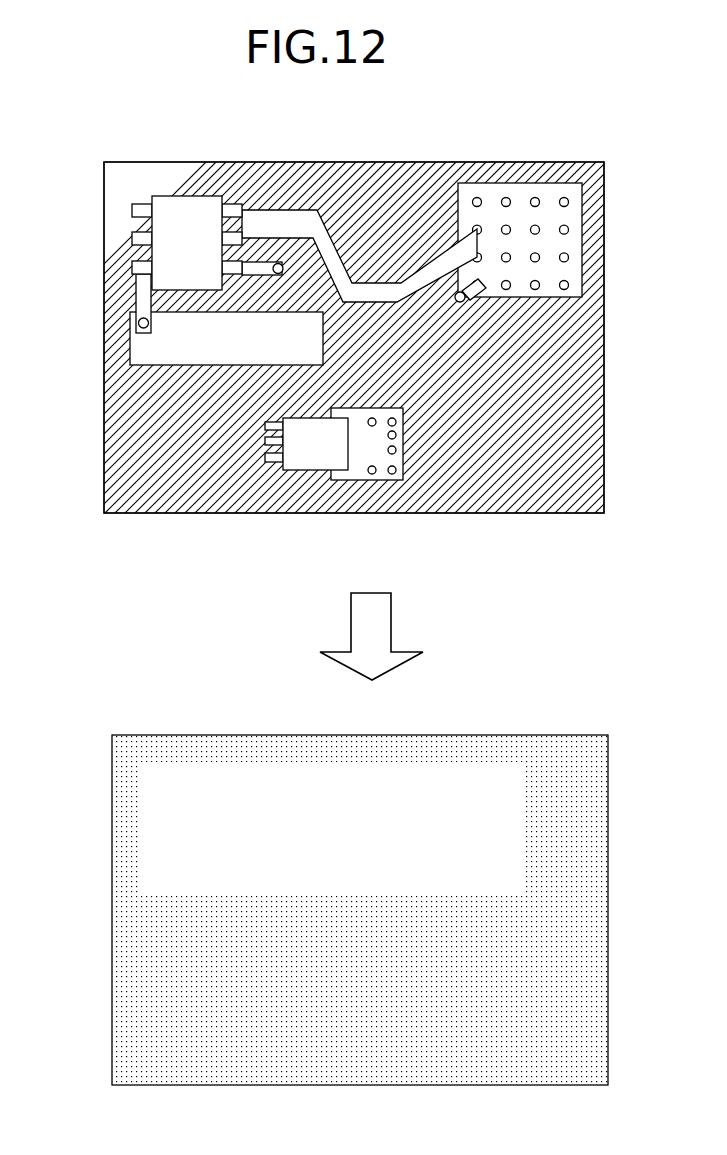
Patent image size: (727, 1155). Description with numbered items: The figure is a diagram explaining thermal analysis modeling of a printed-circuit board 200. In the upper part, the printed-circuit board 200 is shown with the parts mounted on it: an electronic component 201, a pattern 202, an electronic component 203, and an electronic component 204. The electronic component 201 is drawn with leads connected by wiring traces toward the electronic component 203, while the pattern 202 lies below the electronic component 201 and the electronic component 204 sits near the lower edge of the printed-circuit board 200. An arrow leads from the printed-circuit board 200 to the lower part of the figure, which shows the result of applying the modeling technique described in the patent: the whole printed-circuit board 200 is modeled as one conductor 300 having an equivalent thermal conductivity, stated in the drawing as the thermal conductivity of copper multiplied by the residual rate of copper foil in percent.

The printed-circuit board 200 is at (398, 162).
The electronic component 201 is at (191, 207).
The pattern 202 is at (148, 357).
The electronic component 203 is at (552, 188).
The electronic component 204 is at (357, 470).
The conductor 300 is at (112, 880).